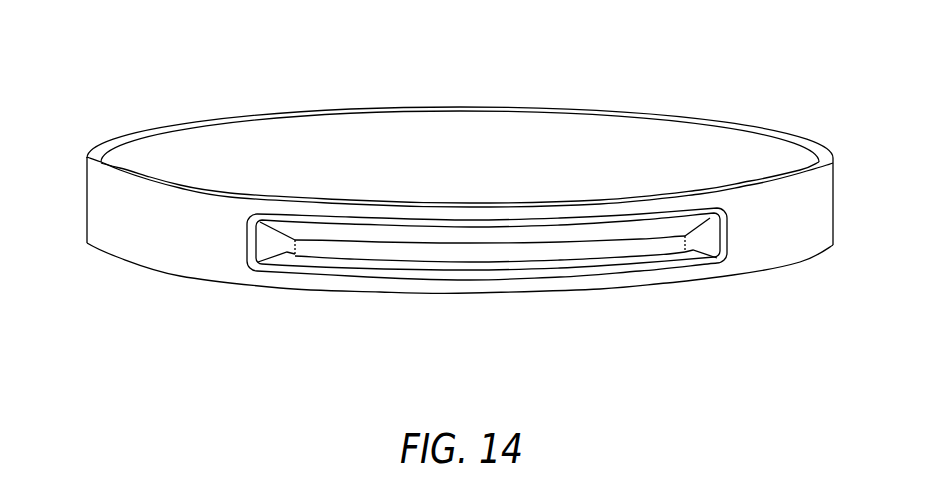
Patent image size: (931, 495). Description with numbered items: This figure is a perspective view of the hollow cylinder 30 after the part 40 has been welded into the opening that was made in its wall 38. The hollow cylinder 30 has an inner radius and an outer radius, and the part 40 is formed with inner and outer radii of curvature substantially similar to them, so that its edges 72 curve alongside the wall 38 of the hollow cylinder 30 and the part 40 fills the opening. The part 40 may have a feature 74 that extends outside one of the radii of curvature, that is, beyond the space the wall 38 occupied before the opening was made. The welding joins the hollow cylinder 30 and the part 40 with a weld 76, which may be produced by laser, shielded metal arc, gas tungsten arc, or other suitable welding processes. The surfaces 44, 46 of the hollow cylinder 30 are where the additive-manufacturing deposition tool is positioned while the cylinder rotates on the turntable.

The hollow cylinder 30 is at (215, 80).
The wall 38 is at (94, 150).
The part 40 is at (664, 262).
The surface 44 is at (519, 167).
The surface 46 is at (790, 239).
The edges 72 is at (300, 218).
The feature 74 is at (357, 241).
The weld 76 is at (338, 273).